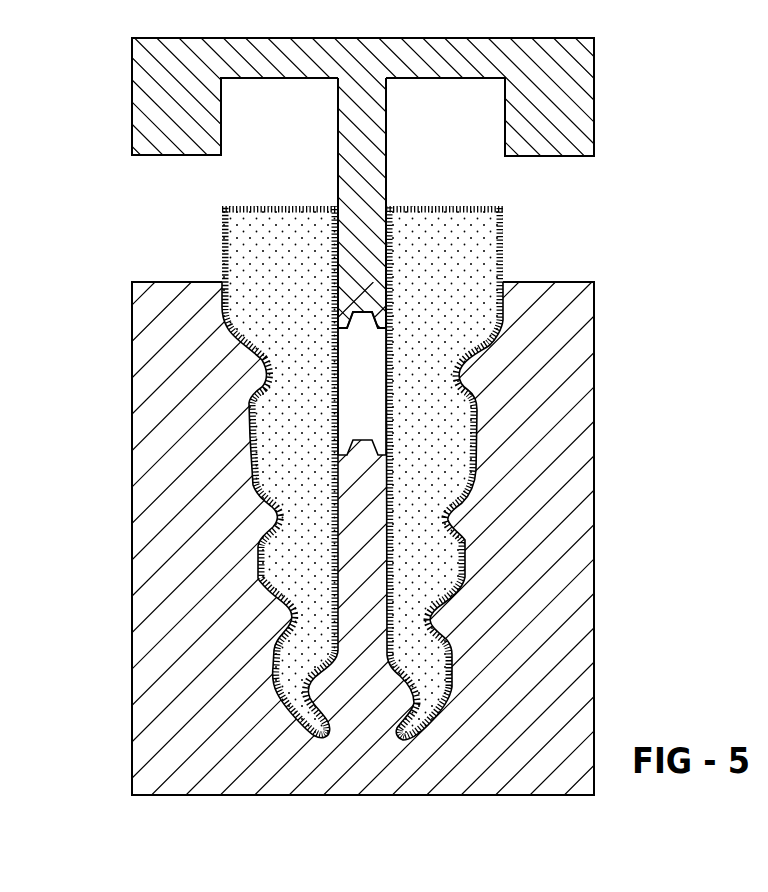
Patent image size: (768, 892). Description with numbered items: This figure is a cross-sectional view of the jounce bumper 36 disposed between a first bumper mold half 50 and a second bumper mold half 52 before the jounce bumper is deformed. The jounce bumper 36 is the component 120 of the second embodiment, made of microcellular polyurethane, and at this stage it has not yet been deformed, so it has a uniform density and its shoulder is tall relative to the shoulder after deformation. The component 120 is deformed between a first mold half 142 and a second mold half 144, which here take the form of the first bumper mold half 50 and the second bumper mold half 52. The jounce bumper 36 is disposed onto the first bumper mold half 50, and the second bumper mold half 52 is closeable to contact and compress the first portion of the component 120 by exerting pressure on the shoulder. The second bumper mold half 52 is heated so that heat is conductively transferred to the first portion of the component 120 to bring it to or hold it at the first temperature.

The second bumper mold half 52 is at (140, 47).
The second mold half 144 is at (138, 97).
The jounce bumper 36 is at (262, 407).
The component 120 is at (263, 453).
The first mold half 142 is at (148, 637).
The first bumper mold half 50 is at (145, 756).